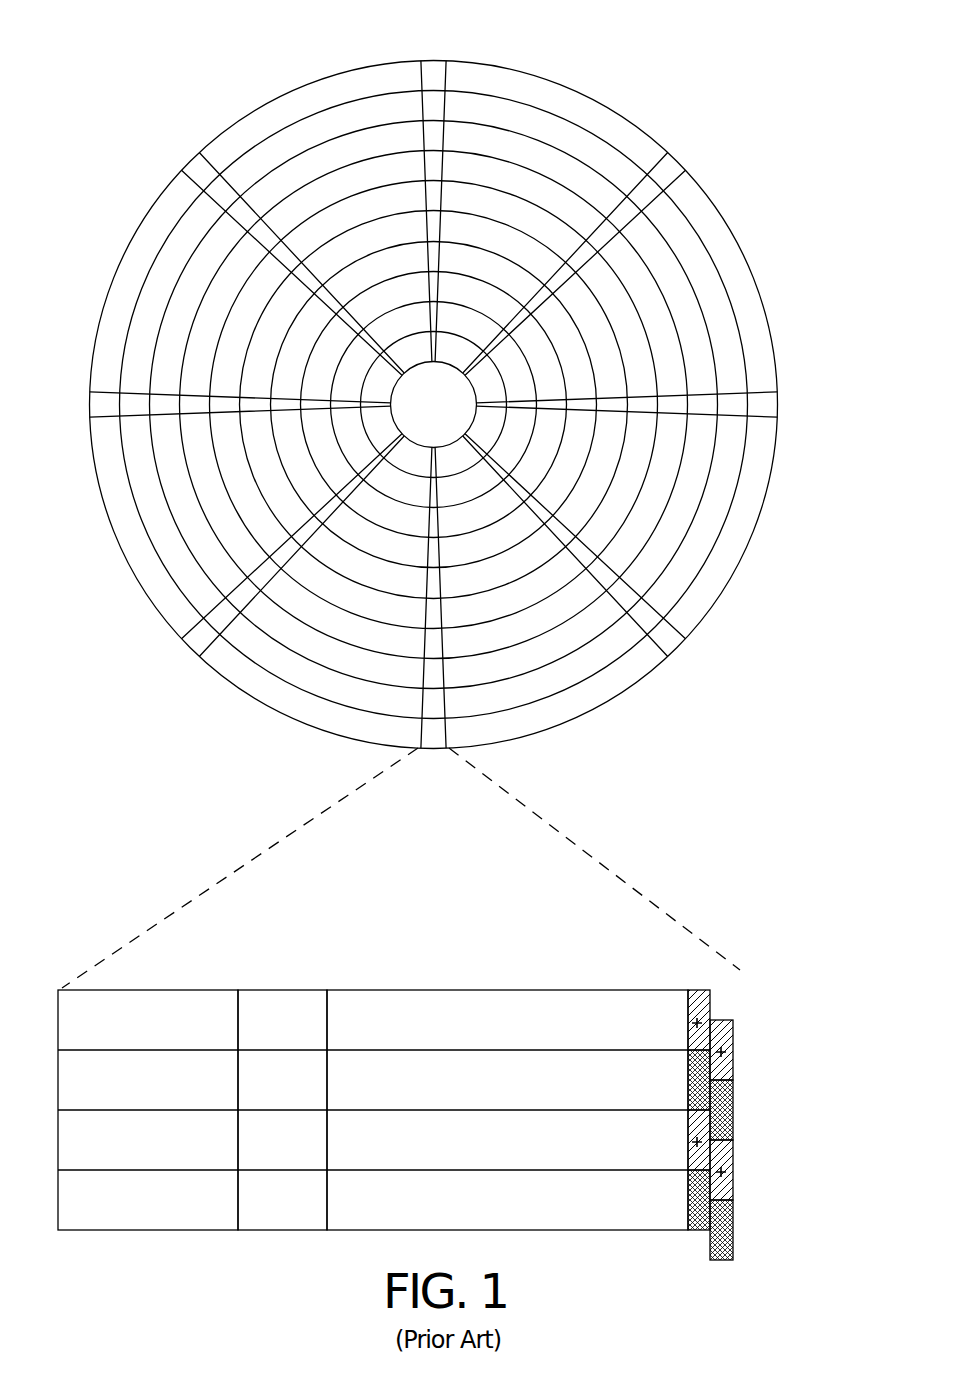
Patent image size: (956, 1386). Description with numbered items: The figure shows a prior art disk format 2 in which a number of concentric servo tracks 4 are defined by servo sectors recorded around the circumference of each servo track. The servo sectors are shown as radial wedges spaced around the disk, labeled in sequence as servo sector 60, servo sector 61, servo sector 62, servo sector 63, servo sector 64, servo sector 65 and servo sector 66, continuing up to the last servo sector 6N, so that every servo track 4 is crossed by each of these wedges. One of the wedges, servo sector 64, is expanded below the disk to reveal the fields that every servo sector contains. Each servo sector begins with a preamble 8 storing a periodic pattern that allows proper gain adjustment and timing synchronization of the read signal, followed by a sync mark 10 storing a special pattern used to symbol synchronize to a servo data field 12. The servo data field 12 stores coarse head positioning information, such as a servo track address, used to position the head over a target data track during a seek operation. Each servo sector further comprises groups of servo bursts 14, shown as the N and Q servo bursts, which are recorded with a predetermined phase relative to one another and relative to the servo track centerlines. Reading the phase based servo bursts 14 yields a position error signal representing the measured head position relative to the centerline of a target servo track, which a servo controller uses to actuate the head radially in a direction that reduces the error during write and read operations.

The disk format 2 is at (180, 67).
The servo track 4 is at (576, 110).
The servo sector 60 is at (433, 70).
The servo sector 61 is at (668, 170).
The servo sector 62 is at (770, 405).
The servo sector 63 is at (667, 641).
The servo sector 64 is at (282, 833).
The servo sector 65 is at (196, 642).
The servo sector 66 is at (97, 404).
The servo sector 6N is at (196, 165).
The preamble 8 is at (157, 990).
The sync mark 10 is at (287, 990).
The servo data field 12 is at (496, 990).
The servo bursts 14 is at (726, 989).